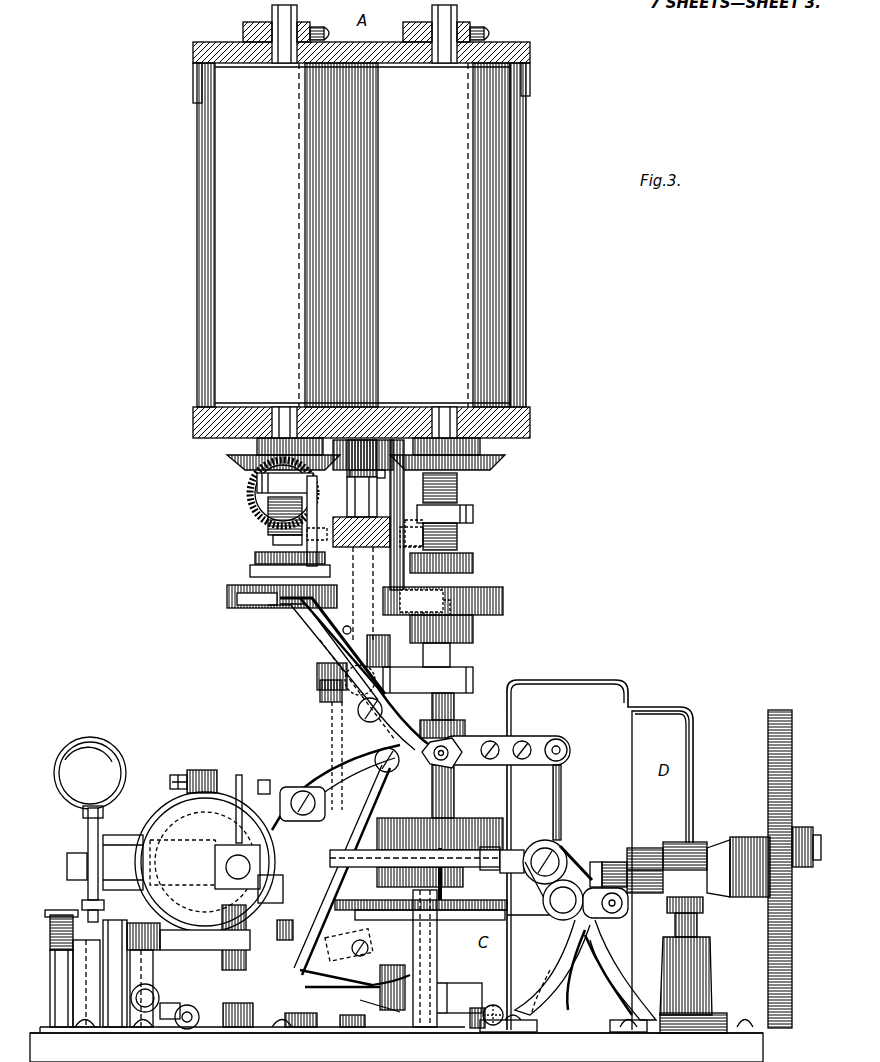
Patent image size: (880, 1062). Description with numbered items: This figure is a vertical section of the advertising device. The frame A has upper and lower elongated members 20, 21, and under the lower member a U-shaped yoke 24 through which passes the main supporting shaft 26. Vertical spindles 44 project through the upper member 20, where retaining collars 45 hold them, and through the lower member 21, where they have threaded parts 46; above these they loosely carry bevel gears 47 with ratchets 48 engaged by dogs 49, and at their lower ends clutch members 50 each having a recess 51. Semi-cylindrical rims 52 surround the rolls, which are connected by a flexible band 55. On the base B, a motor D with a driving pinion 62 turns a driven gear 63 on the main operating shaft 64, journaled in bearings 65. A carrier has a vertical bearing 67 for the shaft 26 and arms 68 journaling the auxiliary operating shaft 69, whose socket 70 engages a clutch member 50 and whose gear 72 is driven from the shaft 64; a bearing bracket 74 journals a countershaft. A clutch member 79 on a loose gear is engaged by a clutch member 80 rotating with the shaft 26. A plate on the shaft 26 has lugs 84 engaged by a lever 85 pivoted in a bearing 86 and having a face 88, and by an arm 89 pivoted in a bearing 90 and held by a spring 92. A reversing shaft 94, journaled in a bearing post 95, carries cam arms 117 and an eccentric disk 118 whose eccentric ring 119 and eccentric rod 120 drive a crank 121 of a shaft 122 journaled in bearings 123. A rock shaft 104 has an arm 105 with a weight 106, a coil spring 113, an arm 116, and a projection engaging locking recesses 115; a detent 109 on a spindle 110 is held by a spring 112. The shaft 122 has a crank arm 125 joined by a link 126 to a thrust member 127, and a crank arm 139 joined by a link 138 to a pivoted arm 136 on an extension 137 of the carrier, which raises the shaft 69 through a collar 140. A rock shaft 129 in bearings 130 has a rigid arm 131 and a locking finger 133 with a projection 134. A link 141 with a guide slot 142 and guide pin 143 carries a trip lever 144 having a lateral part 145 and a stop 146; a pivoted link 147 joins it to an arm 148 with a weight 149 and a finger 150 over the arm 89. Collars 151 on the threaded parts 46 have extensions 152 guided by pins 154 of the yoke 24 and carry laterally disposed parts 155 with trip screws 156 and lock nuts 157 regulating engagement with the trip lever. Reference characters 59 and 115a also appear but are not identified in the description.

The upper elongated member 20 is at (380, 48).
The lower elongated member 21 is at (530, 422).
The U-shaped yoke or bracket 24 is at (345, 552).
The main supporting shaft 26 is at (345, 656).
The vertical spindles 44 is at (458, 25).
The retaining collars 45 is at (258, 31).
The threaded parts 46 is at (270, 520).
The bevel gears 47 is at (235, 462).
The ratchets 48 is at (257, 447).
The dogs 49 is at (480, 446).
The clutch member 50 is at (230, 597).
The recess 51 is at (275, 606).
The semi-cylindrical rims 52 is at (530, 90).
The flexible band or strip 55 is at (370, 258).
The collar 59 is at (258, 482).
The driving pinion 62 is at (798, 827).
The driven gear 63 is at (778, 712).
The main operating shaft 64 is at (637, 855).
The bearings 65 is at (110, 858).
The vertical bearing 67 is at (326, 710).
The laterally extended arms 68 is at (432, 690).
The vertical or auxiliary operating shaft 69 is at (460, 718).
The socket 70 is at (473, 630).
The gear 72 is at (530, 848).
The bearing bracket 74 is at (437, 950).
The clutch member 79 is at (405, 1012).
The clutch member 80 is at (330, 972).
The radially extending lugs 84 is at (350, 1028).
The lever 85 is at (540, 1020).
The bearing 86 is at (503, 1002).
The face 88 is at (625, 908).
The arm 89 is at (467, 1020).
The bearing 90 is at (493, 1028).
The spring 92 is at (296, 790).
The reversing shaft 94 is at (230, 860).
The bearing post 95 is at (239, 776).
The rock shaft 104 is at (52, 915).
The arm 105 is at (100, 840).
The weight 106 is at (115, 762).
The detent 109 is at (226, 945).
The spindle 110 is at (200, 1022).
The spring 112 is at (130, 985).
The coil spring 113 is at (98, 985).
The locking recesses 115 is at (265, 780).
The stop post 115a is at (55, 968).
The arm 116 is at (292, 918).
The cam arms 117 is at (205, 770).
The eccentric disk 118 is at (190, 802).
The eccentric ring 119 is at (173, 823).
The eccentric rod 120 is at (470, 845).
The crank 121 is at (595, 862).
The shaft 122 is at (572, 982).
The bearings 123 is at (625, 975).
The crank arm 125 is at (610, 862).
The link 126 is at (548, 965).
The pivoted thrust member 127 is at (352, 943).
The rock shaft 129 is at (150, 1012).
The bearings 130 is at (140, 1030).
The rigid arm 131 is at (285, 1028).
The locking finger 133 is at (183, 1022).
The projection 134 is at (155, 950).
The pivoted arm 136 is at (505, 737).
The extension 137 is at (330, 780).
The link 138 is at (560, 790).
The crank arm 139 is at (565, 845).
The collar 140 is at (512, 680).
The link 141 is at (446, 675).
The guide slot 142 is at (392, 652).
The guide pin 143 is at (320, 678).
The trip lever 144 is at (350, 676).
The laterally disposed part 145 is at (306, 610).
The stop 146 is at (350, 626).
The pivoted link 147 is at (372, 807).
The arm 148 is at (253, 1025).
The weight 149 is at (440, 907).
The laterally extending finger 150 is at (305, 1028).
The collars 151 is at (252, 498).
The downwardly disposed extensions 152 is at (318, 527).
The guide pins 154 is at (273, 540).
The laterally disposed parts 155 is at (248, 605).
The trip screws 156 is at (258, 560).
The lock nuts 157 is at (250, 572).